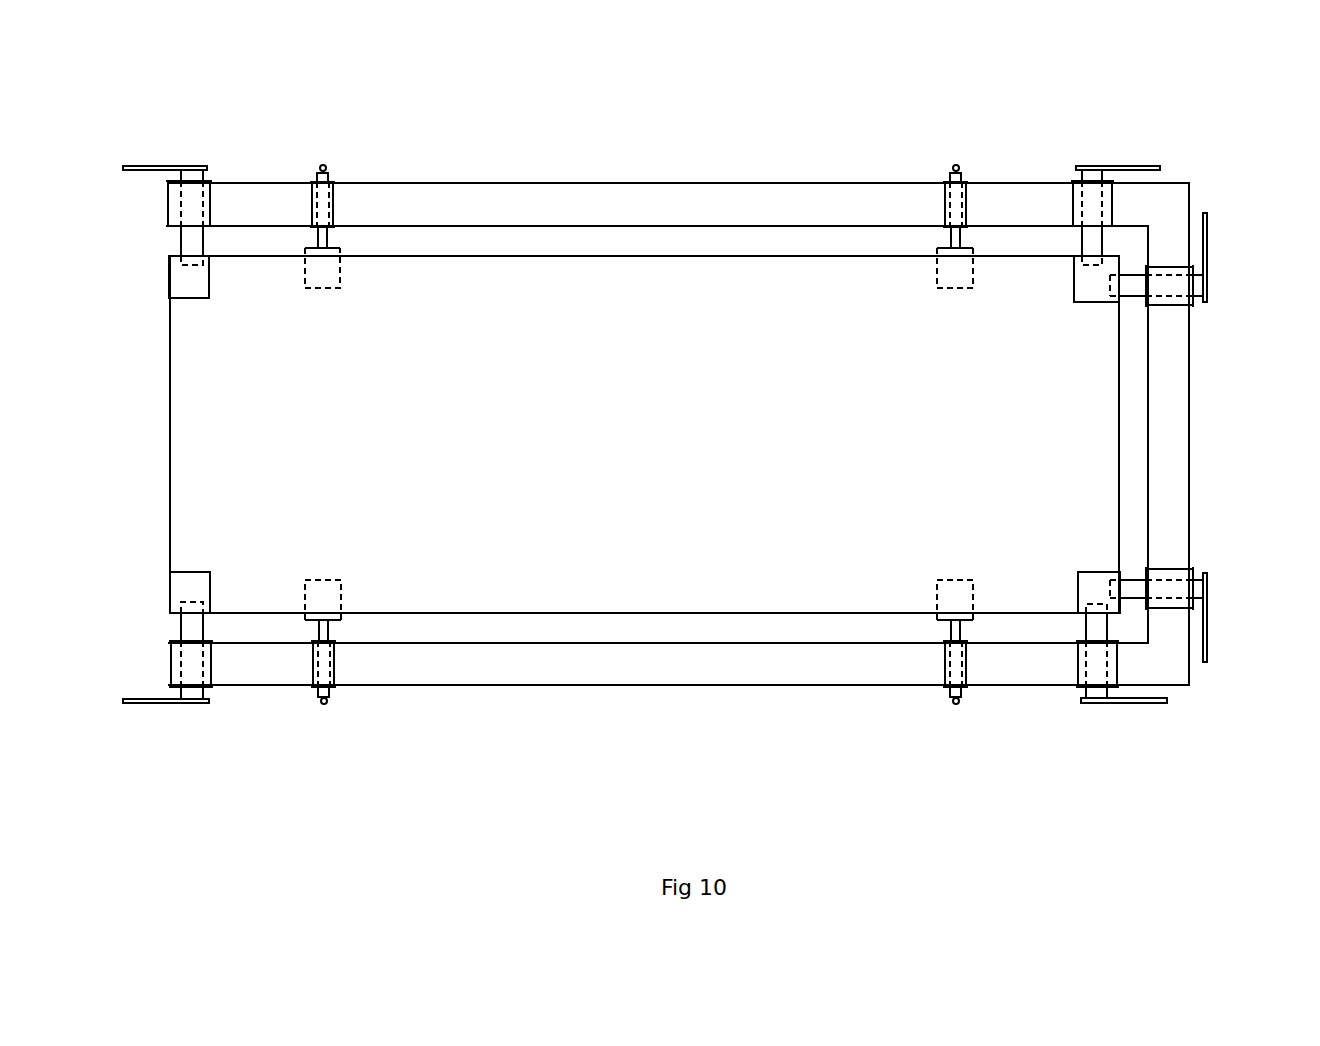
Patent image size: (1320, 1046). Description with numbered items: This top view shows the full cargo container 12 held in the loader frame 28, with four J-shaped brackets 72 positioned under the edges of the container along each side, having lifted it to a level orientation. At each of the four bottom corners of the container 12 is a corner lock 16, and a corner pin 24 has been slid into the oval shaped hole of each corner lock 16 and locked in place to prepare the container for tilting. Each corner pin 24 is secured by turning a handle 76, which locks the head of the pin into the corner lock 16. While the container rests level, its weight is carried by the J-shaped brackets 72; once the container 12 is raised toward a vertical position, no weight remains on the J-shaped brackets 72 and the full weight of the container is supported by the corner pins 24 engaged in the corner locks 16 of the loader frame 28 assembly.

The cargo container 12 is at (183, 485).
The corner lock 16 is at (175, 278).
The corner pin 24 is at (197, 175).
The loader frame 28 is at (630, 187).
The J-shaped bracket 72 is at (320, 165).
The handle 76 is at (128, 166).